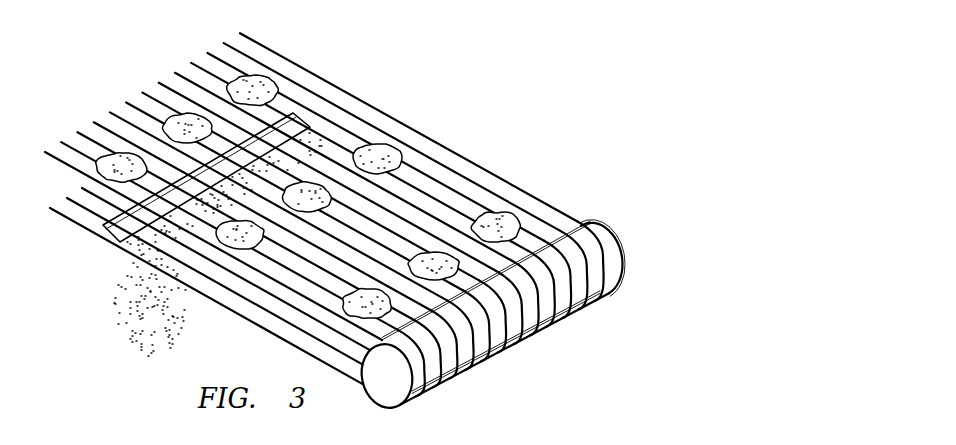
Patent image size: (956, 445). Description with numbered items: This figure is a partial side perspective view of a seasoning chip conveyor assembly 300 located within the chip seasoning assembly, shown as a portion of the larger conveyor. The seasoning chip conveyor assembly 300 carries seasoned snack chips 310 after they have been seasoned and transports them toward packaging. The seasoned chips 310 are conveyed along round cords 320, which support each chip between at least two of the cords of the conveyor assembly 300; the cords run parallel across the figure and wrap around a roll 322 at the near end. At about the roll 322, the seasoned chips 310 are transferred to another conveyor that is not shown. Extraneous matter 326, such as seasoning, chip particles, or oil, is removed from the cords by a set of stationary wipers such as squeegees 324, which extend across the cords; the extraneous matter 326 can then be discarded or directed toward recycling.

The seasoning chip conveyor assembly 300 is at (581, 184).
The seasoned snack chips 310 is at (268, 77).
The round cords 320 is at (444, 157).
The roll 322 is at (372, 391).
The squeegees 324 is at (107, 243).
The extraneous matter 326 is at (133, 346).